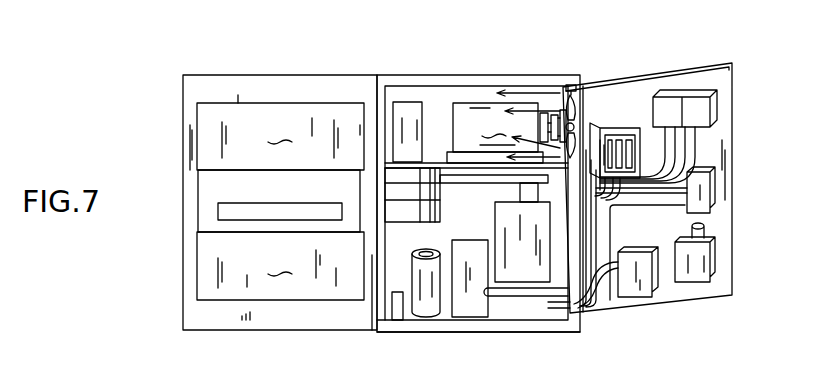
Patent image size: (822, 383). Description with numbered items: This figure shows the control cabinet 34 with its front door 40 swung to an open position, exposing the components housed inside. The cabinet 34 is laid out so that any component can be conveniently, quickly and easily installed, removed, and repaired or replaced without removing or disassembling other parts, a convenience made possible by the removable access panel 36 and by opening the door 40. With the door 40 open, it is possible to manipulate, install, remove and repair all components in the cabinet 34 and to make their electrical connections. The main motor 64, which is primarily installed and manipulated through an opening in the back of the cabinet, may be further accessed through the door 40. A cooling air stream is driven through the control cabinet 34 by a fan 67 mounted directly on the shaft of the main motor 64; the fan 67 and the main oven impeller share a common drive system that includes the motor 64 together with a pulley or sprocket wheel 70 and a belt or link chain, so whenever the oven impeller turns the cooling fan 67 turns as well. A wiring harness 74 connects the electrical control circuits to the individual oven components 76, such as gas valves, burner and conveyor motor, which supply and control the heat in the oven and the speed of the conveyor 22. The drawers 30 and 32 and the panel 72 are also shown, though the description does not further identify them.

The conveyor 22 is at (197, 215).
The upper drawer 30 is at (280, 136).
The lower drawer 32 is at (280, 266).
The control cabinet 34 is at (489, 82).
The access panel 36 is at (370, 316).
The front door 40 is at (733, 176).
The motor 64 is at (495, 133).
The fan 67 is at (574, 104).
The pulley or sprocket wheel 70 is at (562, 107).
The control panel 72 is at (642, 91).
The wiring harness 74 is at (602, 312).
The oven components 76 is at (464, 223).